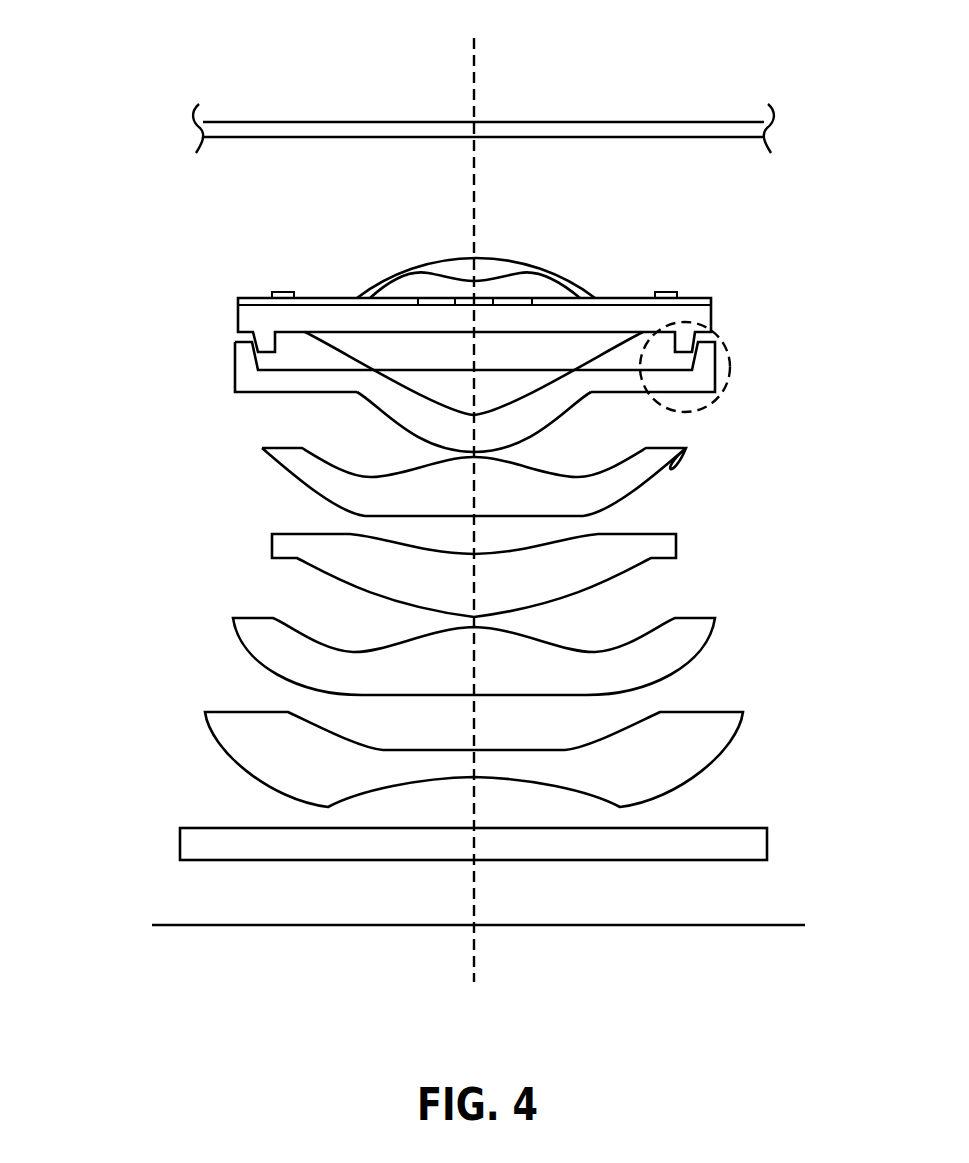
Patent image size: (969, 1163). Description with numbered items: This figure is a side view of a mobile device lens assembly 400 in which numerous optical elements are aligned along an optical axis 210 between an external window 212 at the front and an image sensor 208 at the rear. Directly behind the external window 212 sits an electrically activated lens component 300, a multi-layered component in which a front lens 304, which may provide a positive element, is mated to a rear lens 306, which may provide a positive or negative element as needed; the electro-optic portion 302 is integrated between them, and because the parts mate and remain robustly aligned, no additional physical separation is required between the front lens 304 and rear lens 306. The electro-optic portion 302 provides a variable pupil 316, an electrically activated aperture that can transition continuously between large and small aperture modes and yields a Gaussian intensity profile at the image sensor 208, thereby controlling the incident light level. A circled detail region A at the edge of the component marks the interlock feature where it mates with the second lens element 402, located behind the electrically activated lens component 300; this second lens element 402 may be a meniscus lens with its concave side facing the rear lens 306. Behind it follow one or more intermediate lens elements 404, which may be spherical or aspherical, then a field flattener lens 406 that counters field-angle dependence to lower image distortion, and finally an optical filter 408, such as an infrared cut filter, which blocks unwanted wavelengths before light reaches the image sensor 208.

The mobile device lens assembly 400 is at (139, 72).
The optical axis 210 is at (476, 60).
The external window 212 is at (602, 122).
The electrically activated lens component 300 is at (616, 297).
The electro-optic portion 302 is at (222, 298).
The front lens 304 is at (530, 264).
The variable pupil 316 is at (437, 302).
The rear lens 306 is at (355, 347).
The second lens element 402 is at (235, 373).
The detail region A is at (727, 387).
The intermediate lens elements 404 is at (730, 435).
The field flattener lens 406 is at (735, 760).
The optical filter 408 is at (729, 828).
The image sensor 208 is at (193, 927).